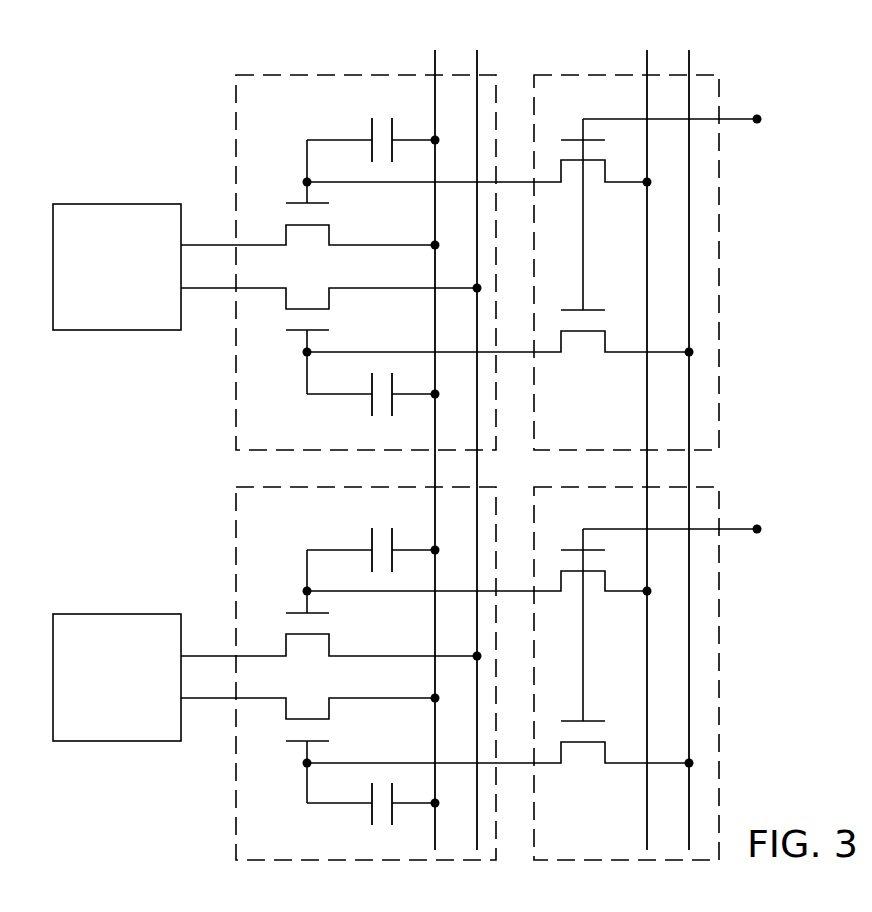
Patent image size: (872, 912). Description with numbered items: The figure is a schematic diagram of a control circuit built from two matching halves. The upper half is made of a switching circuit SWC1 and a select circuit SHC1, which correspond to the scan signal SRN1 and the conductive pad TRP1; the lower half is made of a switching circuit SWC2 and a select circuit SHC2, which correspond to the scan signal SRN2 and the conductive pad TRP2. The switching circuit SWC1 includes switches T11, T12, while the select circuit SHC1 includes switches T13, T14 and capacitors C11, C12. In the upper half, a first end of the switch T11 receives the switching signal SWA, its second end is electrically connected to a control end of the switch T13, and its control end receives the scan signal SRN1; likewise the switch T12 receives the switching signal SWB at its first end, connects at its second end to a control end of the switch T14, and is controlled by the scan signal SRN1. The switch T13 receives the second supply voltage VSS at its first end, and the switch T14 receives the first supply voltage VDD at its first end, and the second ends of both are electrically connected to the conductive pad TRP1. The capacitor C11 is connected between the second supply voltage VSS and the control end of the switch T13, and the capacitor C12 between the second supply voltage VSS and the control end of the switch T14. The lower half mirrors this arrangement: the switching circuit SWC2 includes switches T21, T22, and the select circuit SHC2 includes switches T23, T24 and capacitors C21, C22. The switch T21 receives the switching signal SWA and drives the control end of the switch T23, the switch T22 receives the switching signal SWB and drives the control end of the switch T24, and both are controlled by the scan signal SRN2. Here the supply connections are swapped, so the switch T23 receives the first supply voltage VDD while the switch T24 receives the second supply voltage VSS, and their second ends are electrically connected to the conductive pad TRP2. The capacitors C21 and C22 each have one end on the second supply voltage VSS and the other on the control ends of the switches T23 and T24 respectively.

The second supply voltage VSS is at (420, 435).
The first supply voltage VDD is at (482, 435).
The switching signal SWA is at (623, 435).
The switching signal SWB is at (700, 435).
The select circuit SHC1 is at (366, 262).
The select circuit SHC2 is at (366, 673).
The switching circuit SWC1 is at (626, 262).
The switching circuit SWC2 is at (626, 673).
The conductive pad TRP1 is at (117, 267).
The conductive pad TRP2 is at (117, 677).
The capacitor C11 is at (373, 125).
The capacitor C12 is at (373, 405).
The capacitor C21 is at (373, 536).
The capacitor C22 is at (373, 815).
The switch T11 is at (479, 176).
The switch T12 is at (500, 345).
The switch T13 is at (310, 195).
The switch T14 is at (331, 339).
The switch T21 is at (479, 586).
The switch T22 is at (500, 756).
The switch T23 is at (331, 605).
The switch T24 is at (310, 749).
The scan signal SRN1 is at (706, 209).
The scan signal SRN2 is at (706, 620).